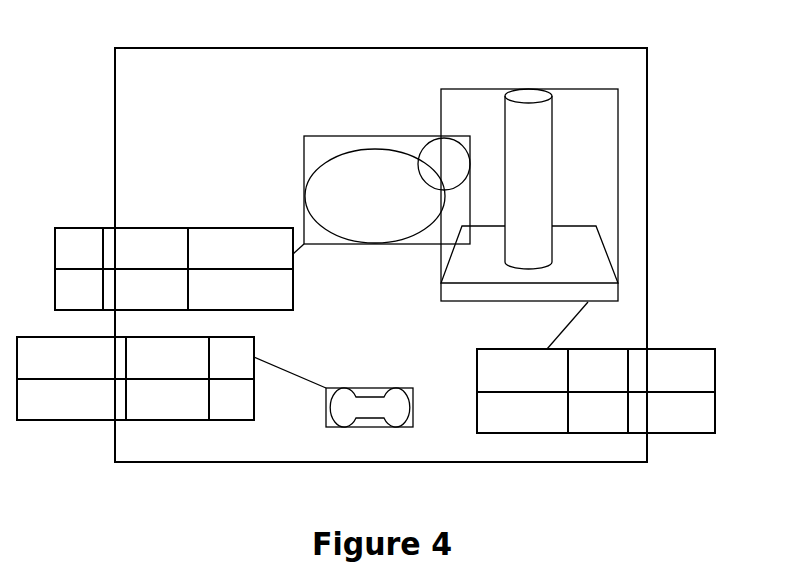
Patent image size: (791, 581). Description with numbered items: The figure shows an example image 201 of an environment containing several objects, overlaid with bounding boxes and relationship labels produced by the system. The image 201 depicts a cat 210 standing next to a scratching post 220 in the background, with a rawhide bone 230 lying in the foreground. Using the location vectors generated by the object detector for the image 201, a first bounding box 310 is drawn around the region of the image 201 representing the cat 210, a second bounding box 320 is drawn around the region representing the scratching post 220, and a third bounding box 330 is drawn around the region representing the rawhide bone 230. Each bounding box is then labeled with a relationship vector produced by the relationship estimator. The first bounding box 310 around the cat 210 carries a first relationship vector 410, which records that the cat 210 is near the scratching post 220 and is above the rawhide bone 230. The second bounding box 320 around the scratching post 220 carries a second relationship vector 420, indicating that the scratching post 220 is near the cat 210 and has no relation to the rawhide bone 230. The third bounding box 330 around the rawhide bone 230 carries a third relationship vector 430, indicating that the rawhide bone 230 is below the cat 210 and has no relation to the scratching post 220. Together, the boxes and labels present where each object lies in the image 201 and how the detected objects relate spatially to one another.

The image 201 is at (585, 48).
The cat 210 is at (355, 148).
The scratching post 220 is at (556, 134).
The rawhide bone 230 is at (370, 395).
The first bounding box 310 is at (303, 151).
The second bounding box 320 is at (458, 90).
The third bounding box 330 is at (363, 427).
The first relationship vector 410 is at (90, 226).
The second relationship vector 420 is at (686, 348).
The third relationship vector 430 is at (76, 424).